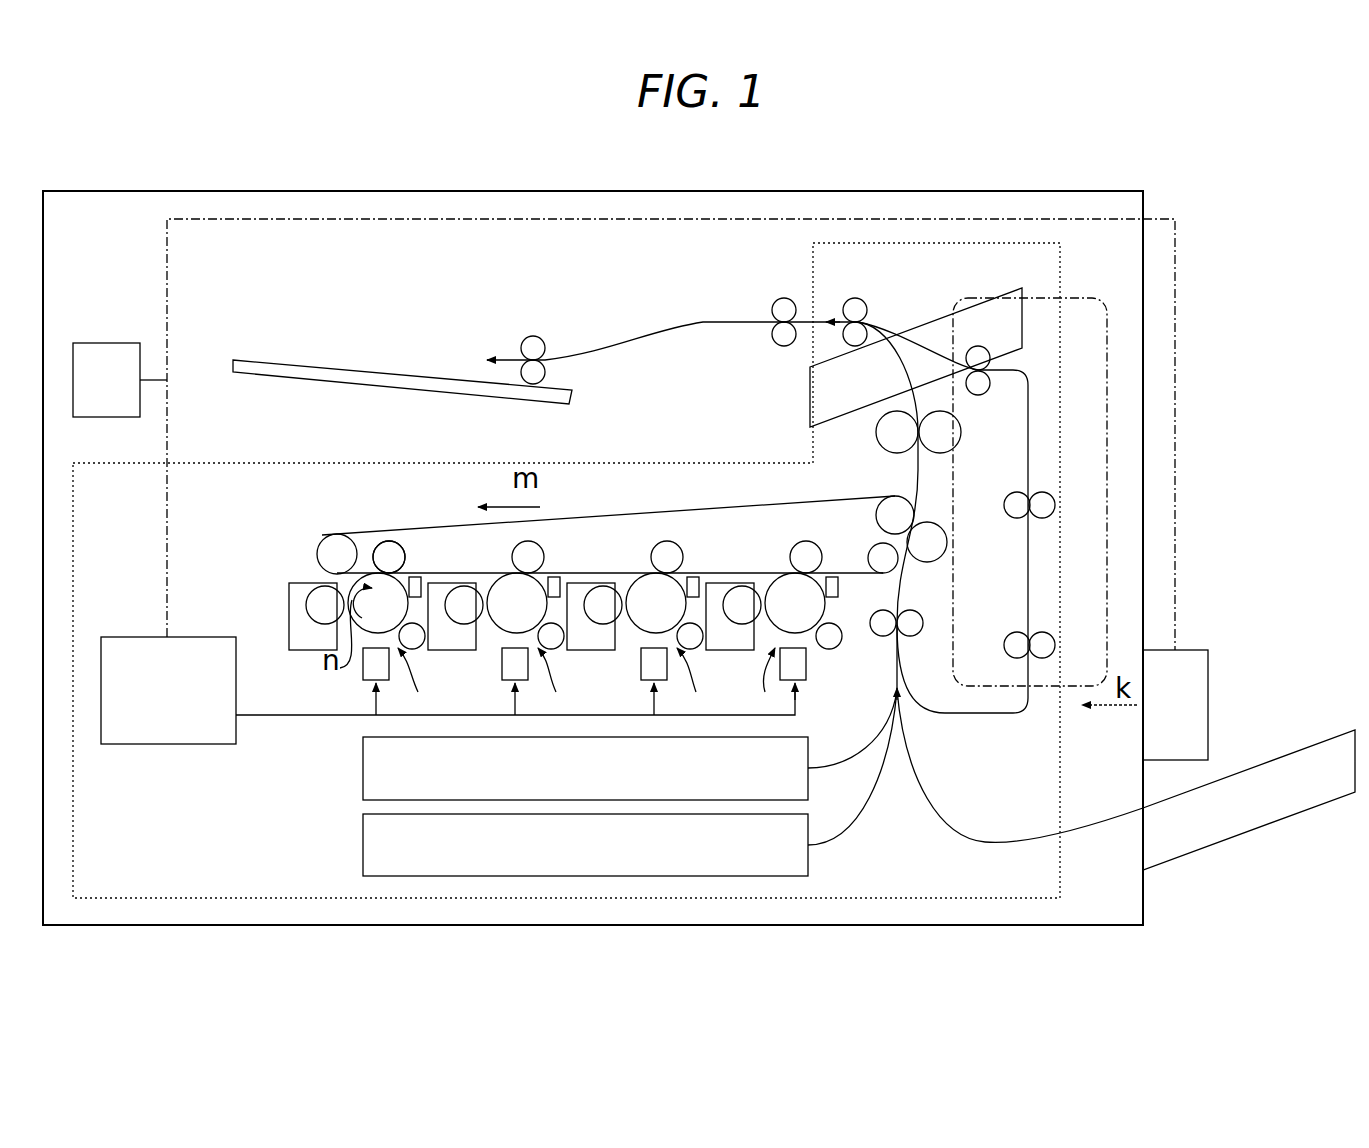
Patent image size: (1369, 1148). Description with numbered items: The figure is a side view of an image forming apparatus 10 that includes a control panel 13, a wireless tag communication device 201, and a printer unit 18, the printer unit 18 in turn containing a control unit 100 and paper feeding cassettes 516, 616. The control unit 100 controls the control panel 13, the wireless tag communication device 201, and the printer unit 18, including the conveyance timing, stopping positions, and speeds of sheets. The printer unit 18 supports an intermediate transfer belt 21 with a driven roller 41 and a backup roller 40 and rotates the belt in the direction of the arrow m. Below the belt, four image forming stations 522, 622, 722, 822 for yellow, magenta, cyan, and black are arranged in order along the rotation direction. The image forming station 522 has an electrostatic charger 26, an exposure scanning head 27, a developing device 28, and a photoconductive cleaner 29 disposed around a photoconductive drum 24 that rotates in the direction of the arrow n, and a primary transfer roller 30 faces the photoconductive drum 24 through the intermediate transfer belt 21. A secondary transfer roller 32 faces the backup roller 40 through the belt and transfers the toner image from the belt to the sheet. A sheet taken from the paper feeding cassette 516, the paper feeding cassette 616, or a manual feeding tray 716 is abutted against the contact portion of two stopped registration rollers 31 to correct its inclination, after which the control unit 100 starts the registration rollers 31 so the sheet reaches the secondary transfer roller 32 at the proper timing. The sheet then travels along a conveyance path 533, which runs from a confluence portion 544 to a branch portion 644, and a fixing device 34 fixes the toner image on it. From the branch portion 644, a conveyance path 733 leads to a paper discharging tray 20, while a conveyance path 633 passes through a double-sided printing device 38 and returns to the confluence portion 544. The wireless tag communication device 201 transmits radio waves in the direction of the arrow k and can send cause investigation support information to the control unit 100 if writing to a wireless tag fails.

The image forming apparatus 10 is at (235, 178).
The control panel 13 is at (128, 343).
The printer unit 18 is at (118, 463).
The paper discharging tray 20 is at (375, 372).
The intermediate transfer belt 21 is at (677, 507).
The photoconductive drum 24 is at (352, 585).
The electrostatic charger 26 is at (420, 648).
The exposure scanning head 27 is at (363, 665).
The developing device 28 is at (289, 611).
The photoconductive cleaner 29 is at (415, 577).
The primary transfer roller 30 is at (388, 541).
The registration rollers 31 is at (880, 638).
The secondary transfer roller 32 is at (930, 563).
The fixing device 34 is at (908, 418).
The double-sided printing device 38 is at (1072, 298).
The backup roller 40 is at (876, 514).
The driven roller 41 is at (320, 540).
The control unit 100 is at (130, 637).
The wireless tag communication device 201 is at (1190, 650).
The paper feeding cassette 516 is at (363, 768).
The image forming station 522 is at (421, 680).
The conveyance path 533 is at (912, 480).
The confluence portion 544 is at (902, 690).
The paper feeding cassette 616 is at (363, 845).
The image forming station 622 is at (560, 680).
The conveyance path 633 is at (928, 355).
The branch portion 644 is at (880, 322).
The manual feeding tray 716 is at (1318, 737).
The image forming station 722 is at (692, 680).
The conveyance path 733 is at (790, 300).
The image forming station 822 is at (753, 680).